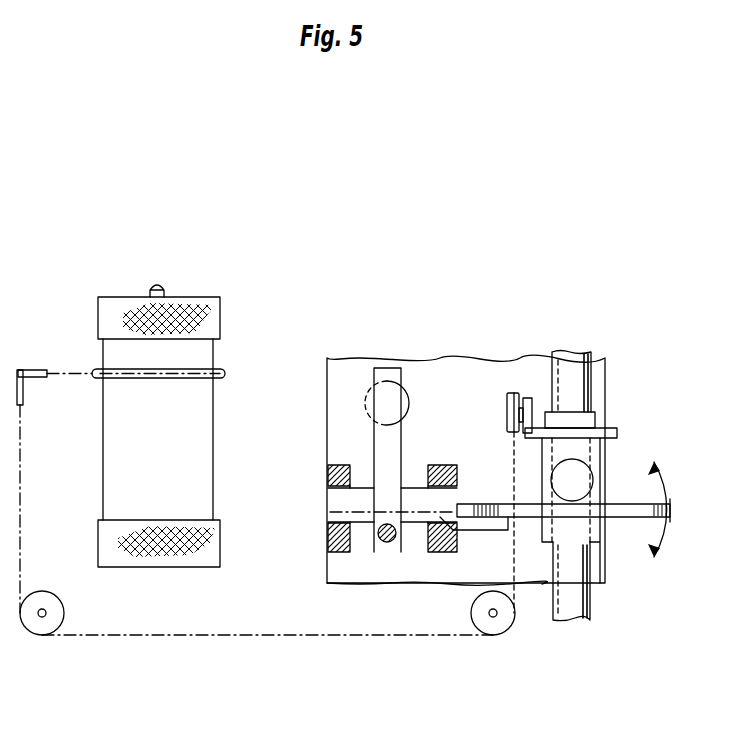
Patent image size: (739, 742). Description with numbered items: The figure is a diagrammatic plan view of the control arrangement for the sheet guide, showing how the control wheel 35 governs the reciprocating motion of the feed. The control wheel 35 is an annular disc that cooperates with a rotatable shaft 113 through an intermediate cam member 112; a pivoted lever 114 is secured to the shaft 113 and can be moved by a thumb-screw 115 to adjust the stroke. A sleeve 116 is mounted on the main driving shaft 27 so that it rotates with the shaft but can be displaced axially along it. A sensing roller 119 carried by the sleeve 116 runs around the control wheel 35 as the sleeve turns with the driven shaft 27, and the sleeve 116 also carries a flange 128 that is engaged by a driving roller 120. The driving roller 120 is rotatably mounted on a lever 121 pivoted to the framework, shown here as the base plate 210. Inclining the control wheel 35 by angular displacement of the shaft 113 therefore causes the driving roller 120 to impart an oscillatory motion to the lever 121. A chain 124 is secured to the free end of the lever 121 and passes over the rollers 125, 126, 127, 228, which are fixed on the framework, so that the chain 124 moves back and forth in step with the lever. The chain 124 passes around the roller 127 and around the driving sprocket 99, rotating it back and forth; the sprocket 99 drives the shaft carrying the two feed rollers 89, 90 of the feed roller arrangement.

The main driving shaft 27 is at (578, 365).
The control wheel 35 is at (640, 519).
The feed roller 89 is at (152, 555).
The feed roller 90 is at (210, 310).
The driving sprocket 99 is at (96, 370).
The intermediate cam member 112 is at (462, 520).
The rotatable shaft 113 is at (416, 548).
The pivoted lever 114 is at (378, 546).
The thumb-screw 115 is at (372, 385).
The sleeve 116 is at (598, 430).
The sensing roller 119 is at (560, 478).
The driving roller 120 is at (527, 405).
The lever 121 is at (507, 402).
The chain 124 is at (332, 640).
The roller 125 is at (491, 632).
The roller 126 is at (48, 622).
The roller 127 is at (33, 370).
The flange 128 is at (543, 412).
The base plate 210 is at (428, 372).
The roller 228 is at (22, 405).